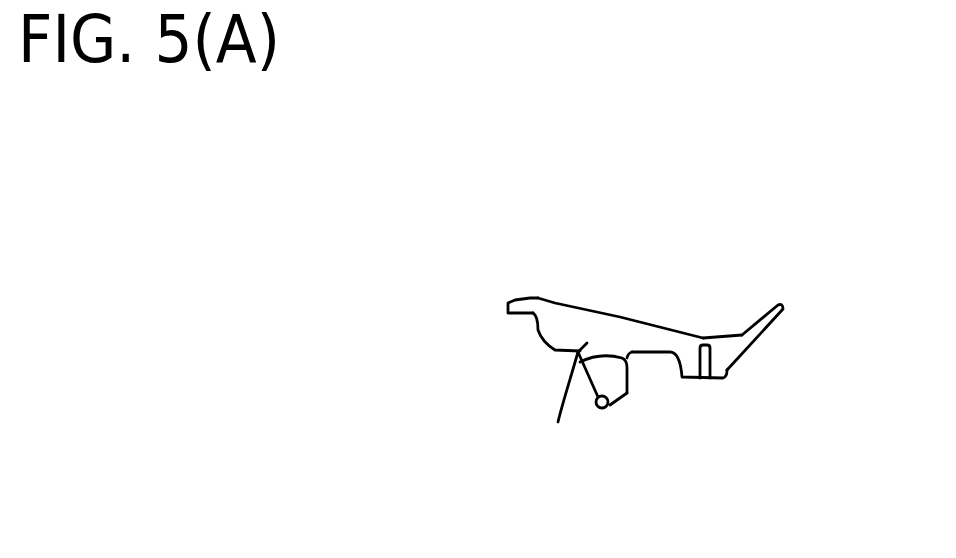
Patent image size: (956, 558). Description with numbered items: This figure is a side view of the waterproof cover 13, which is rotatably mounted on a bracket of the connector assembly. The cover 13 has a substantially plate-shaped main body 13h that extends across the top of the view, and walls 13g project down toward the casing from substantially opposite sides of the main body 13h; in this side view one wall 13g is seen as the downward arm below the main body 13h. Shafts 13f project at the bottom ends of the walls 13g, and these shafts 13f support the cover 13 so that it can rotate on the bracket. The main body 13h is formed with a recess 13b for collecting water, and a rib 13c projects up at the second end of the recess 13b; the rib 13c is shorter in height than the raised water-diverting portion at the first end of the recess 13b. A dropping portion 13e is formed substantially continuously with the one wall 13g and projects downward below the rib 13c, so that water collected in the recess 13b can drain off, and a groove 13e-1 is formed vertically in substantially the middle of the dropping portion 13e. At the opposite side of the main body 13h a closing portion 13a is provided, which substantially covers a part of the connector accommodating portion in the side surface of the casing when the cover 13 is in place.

The waterproof cover 13 is at (503, 296).
The closing portion 13a is at (508, 313).
The main body 13h is at (570, 301).
The recess 13b is at (717, 333).
The rib 13c is at (743, 333).
The dropping portion 13e is at (722, 370).
The groove 13e-1 is at (704, 367).
The wall 13g is at (558, 420).
The shaft 13f is at (597, 410).